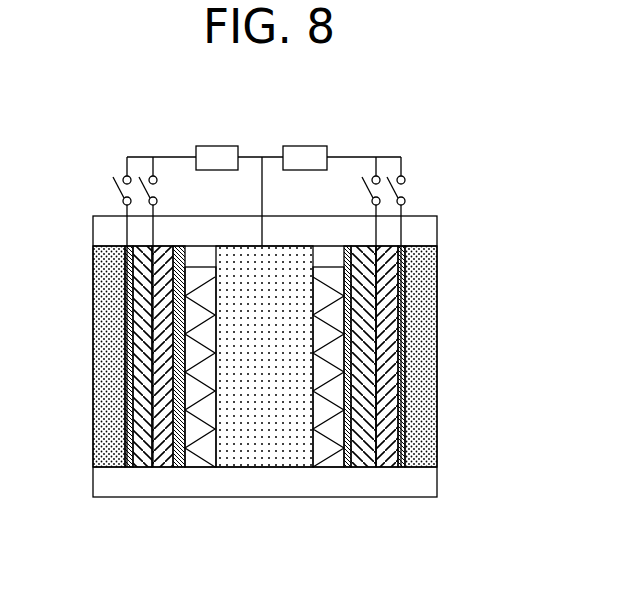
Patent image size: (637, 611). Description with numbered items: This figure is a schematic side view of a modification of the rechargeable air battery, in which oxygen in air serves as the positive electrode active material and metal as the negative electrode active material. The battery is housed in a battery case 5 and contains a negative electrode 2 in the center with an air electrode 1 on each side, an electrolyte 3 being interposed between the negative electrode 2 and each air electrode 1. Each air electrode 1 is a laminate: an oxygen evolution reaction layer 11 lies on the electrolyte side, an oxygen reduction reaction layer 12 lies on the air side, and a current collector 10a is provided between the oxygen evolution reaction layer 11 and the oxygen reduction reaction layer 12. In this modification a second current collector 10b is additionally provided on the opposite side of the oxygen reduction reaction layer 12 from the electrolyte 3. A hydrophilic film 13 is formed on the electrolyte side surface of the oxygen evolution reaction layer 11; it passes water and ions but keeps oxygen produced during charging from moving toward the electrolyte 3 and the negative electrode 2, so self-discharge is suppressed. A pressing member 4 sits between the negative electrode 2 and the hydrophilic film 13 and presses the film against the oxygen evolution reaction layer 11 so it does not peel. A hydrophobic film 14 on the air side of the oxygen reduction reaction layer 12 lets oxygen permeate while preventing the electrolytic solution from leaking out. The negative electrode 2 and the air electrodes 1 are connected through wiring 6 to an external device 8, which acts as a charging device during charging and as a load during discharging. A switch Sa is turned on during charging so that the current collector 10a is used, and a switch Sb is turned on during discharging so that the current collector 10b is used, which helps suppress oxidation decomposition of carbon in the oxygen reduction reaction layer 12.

The air electrode 1 is at (138, 486).
The negative electrode 2 is at (250, 246).
The electrolyte 3 is at (327, 266).
The pressing member 4 is at (200, 267).
The battery case 5 is at (97, 216).
The wiring 6 is at (338, 157).
The external device 8 is at (305, 146).
The switch Sa is at (350, 189).
The switch Sb is at (413, 198).
The hydrophilic film 13 is at (345, 467).
The oxygen evolution reaction layer 11 is at (360, 467).
The current collector 10a is at (375, 467).
The oxygen reduction reaction layer 12 is at (390, 467).
The current collector 10b is at (412, 467).
The hydrophobic film 14 is at (425, 467).